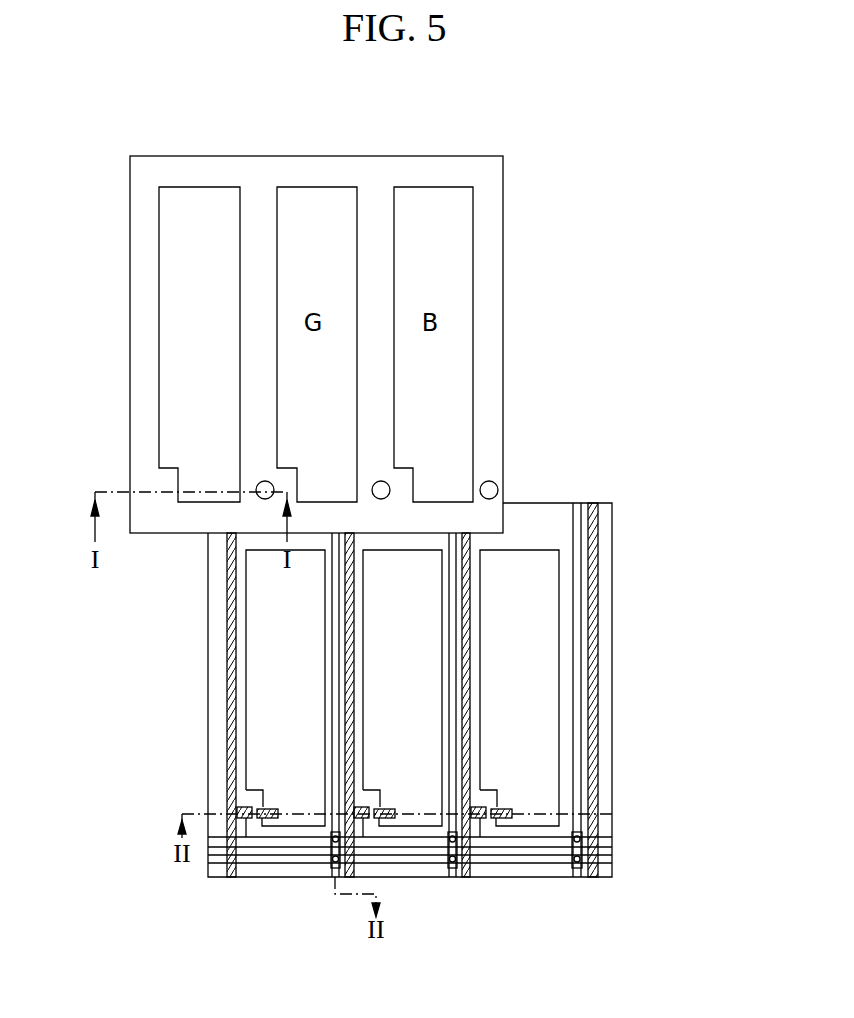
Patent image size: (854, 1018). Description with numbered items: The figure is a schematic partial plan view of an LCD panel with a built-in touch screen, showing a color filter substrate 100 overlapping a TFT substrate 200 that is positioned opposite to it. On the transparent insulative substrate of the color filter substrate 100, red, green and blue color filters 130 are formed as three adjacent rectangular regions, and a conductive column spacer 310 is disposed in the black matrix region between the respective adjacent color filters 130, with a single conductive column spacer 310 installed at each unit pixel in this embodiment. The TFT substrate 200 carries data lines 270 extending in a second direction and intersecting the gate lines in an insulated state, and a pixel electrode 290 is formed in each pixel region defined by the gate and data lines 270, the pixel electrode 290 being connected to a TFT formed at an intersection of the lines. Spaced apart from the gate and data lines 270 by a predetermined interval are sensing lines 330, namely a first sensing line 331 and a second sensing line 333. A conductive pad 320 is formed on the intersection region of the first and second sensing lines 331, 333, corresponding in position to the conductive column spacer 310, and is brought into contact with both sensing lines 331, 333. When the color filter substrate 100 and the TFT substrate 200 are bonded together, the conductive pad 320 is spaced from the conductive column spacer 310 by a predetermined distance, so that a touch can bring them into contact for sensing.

The color filter substrate 100 is at (535, 165).
The color filters 130 is at (185, 212).
The conductive column spacer 310 is at (258, 484).
The TFT substrate 200 is at (652, 590).
The data lines 270 is at (226, 682).
The pixel electrode 290 is at (262, 625).
The conductive pad 320 is at (456, 878).
The sensing lines 330 is at (257, 887).
The first sensing line 331 is at (221, 858).
The second sensing line 333 is at (310, 824).